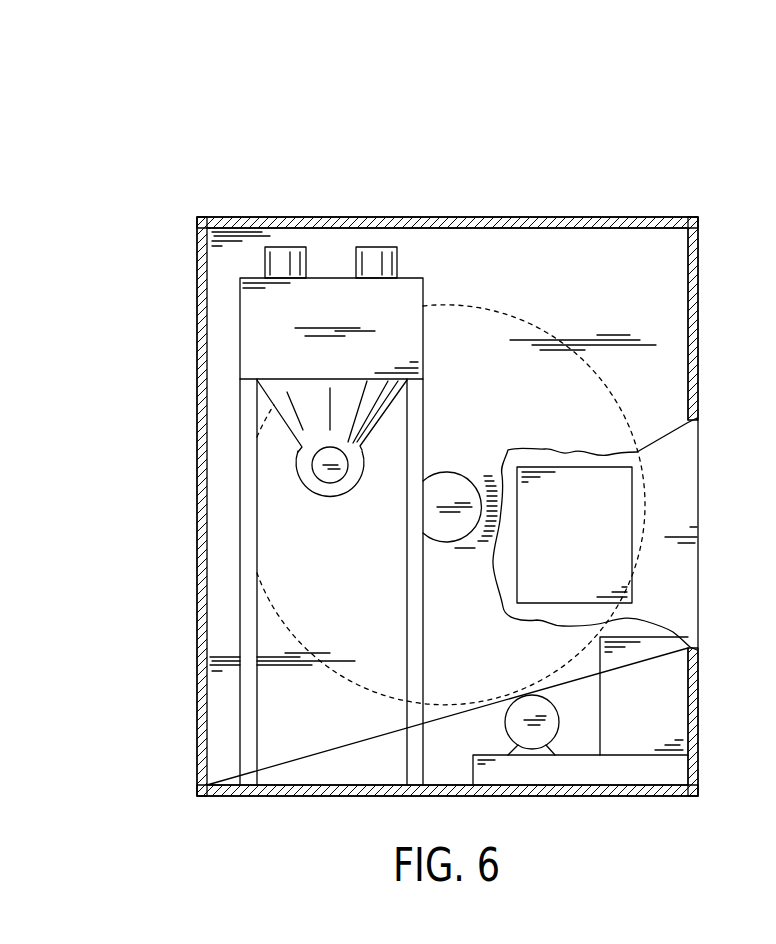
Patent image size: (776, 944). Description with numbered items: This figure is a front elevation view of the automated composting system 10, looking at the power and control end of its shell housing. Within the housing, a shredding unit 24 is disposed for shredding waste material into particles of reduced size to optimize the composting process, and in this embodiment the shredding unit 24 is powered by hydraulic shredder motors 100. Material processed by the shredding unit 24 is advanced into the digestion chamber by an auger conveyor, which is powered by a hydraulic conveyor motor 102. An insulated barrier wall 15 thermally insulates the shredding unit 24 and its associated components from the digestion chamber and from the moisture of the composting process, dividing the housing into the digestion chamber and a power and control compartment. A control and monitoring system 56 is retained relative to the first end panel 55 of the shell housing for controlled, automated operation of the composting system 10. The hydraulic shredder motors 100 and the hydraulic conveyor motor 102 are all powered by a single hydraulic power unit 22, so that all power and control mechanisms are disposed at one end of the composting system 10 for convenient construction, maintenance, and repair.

The composting system 10 is at (215, 105).
The insulated barrier wall 15 is at (660, 279).
The hydraulic power unit 22 is at (670, 695).
The shredding unit 24 is at (423, 297).
The first end panel 55 is at (677, 582).
The control and monitoring system 56 is at (615, 510).
The hydraulic shredder motors 100 is at (285, 247).
The hydraulic conveyor motor 102 is at (345, 476).